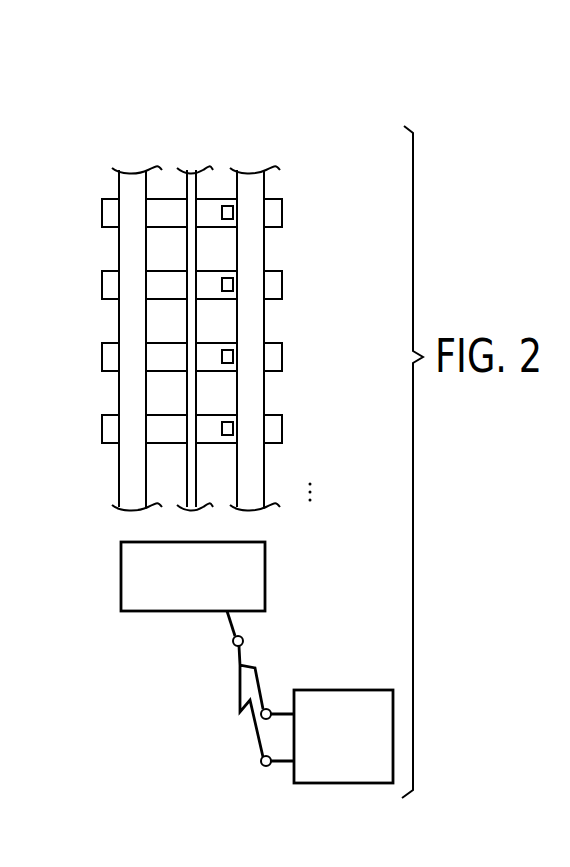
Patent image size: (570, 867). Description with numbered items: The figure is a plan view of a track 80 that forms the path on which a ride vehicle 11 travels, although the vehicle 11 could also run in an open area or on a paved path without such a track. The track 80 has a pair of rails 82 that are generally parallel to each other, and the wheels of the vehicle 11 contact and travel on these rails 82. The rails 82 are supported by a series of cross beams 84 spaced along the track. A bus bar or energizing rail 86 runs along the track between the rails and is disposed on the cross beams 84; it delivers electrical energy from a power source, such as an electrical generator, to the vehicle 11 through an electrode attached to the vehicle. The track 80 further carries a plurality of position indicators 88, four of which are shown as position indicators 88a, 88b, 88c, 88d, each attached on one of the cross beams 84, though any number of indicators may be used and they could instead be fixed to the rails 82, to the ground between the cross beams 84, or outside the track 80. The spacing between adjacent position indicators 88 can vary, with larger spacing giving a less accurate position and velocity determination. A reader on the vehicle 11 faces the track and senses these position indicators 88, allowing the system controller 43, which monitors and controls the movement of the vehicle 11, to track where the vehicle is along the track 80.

The track 80 is at (61, 140).
The rails 82 is at (132, 178).
The cross beams 84 is at (108, 213).
The bus bar or energizing rail 86 is at (192, 480).
The position indicators 88 is at (353, 514).
The position indicator 88a is at (227, 219).
The position indicator 88b is at (227, 291).
The position indicator 88c is at (227, 363).
The position indicator 88d is at (227, 435).
The vehicle 11 is at (282, 569).
The system controller 43 is at (341, 690).